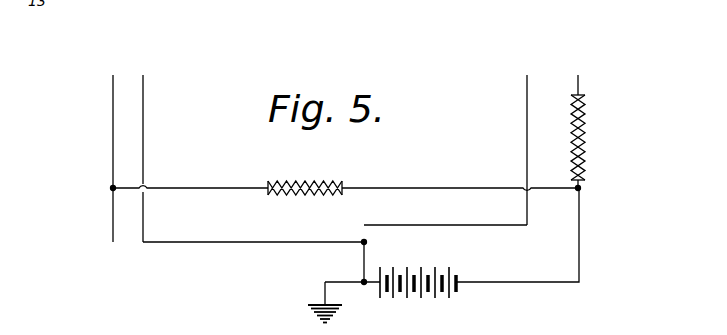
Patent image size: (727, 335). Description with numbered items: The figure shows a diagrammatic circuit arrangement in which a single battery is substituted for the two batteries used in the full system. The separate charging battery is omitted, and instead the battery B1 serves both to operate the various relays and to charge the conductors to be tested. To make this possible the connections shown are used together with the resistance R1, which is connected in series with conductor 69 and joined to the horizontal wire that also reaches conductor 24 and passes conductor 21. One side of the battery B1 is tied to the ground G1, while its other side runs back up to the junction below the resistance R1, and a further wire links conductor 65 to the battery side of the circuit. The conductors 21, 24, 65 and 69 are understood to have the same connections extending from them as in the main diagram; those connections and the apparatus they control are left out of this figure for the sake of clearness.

The conductor 24 is at (112, 121).
The conductor 21 is at (144, 137).
The conductor 65 is at (526, 121).
The conductor 69 is at (579, 81).
The resistance R1 is at (594, 141).
The battery B1 is at (418, 270).
The ground G1 is at (312, 302).